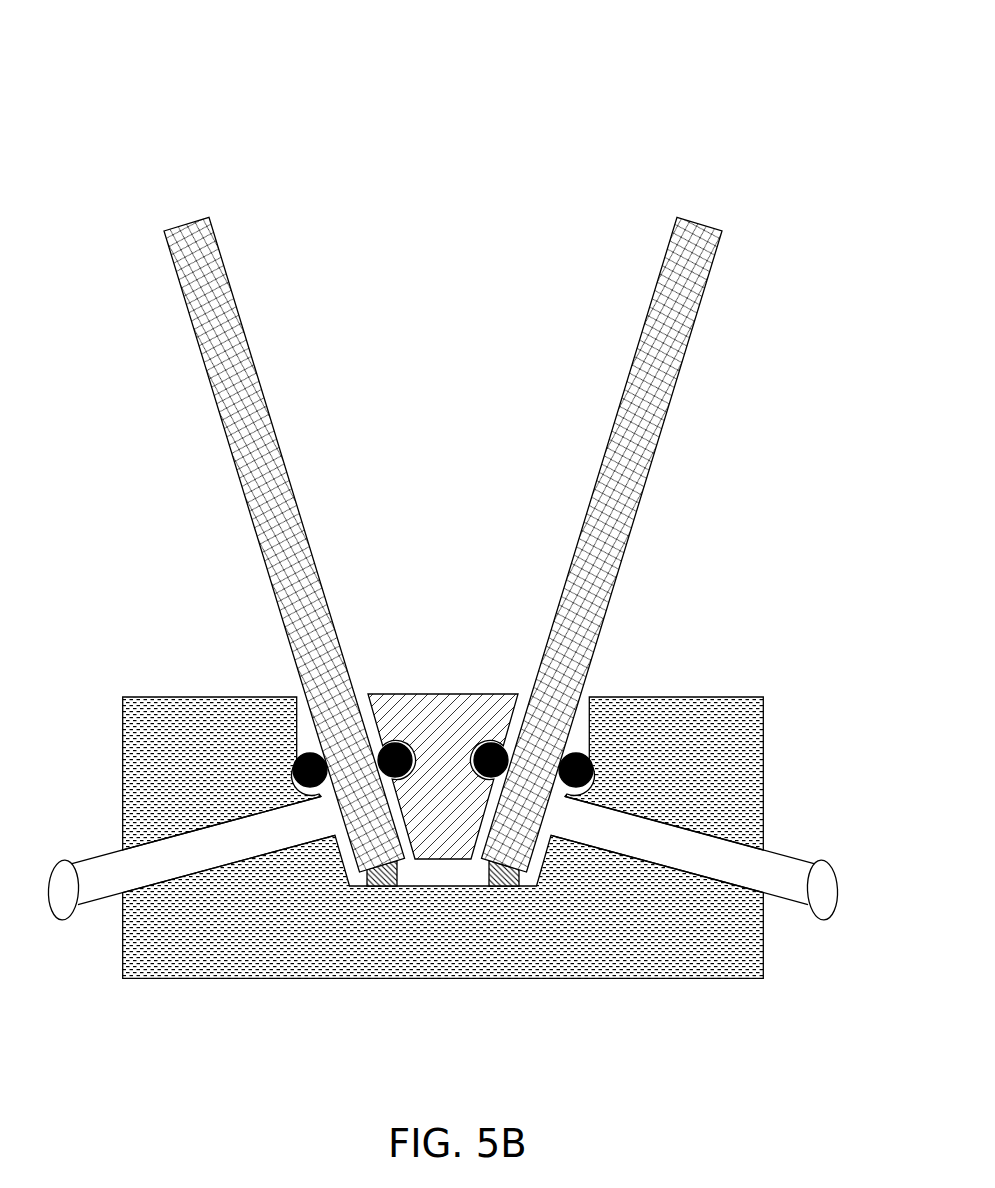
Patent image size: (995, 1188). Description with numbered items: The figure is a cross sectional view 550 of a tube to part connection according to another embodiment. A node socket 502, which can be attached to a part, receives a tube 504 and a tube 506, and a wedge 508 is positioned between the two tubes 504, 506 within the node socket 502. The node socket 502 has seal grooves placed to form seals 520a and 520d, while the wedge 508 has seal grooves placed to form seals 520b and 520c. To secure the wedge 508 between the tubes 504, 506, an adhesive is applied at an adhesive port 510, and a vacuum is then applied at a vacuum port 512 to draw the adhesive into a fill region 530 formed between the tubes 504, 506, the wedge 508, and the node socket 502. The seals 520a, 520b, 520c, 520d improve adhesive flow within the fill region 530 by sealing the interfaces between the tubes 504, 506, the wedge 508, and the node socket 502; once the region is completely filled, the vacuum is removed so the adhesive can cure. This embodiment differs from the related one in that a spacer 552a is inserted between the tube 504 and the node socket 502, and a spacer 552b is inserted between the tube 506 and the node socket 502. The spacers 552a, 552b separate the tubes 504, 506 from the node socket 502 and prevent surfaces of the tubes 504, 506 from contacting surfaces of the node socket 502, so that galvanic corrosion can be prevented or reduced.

The cross sectional view 550 is at (124, 90).
The node socket 502 is at (192, 735).
The tube 504 is at (190, 315).
The tube 506 is at (705, 283).
The wedge 508 is at (435, 694).
The adhesive port 510 is at (100, 898).
The vacuum port 512 is at (783, 853).
The seal 520a is at (294, 762).
The seal 520b is at (394, 742).
The seal 520c is at (491, 742).
The seal 520d is at (592, 754).
The fill region 530 is at (437, 874).
The spacer 552a is at (356, 884).
The spacer 552b is at (472, 887).